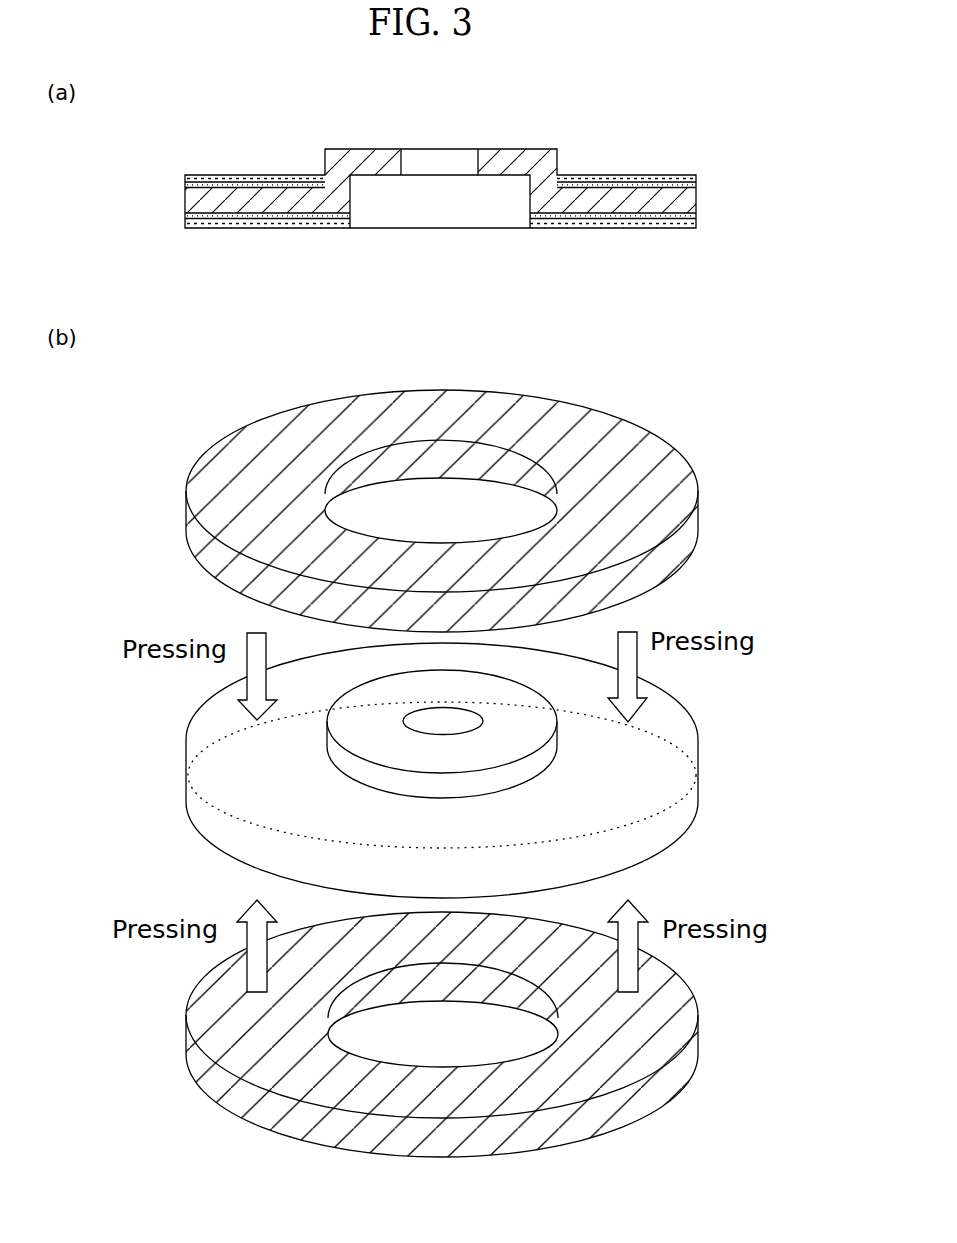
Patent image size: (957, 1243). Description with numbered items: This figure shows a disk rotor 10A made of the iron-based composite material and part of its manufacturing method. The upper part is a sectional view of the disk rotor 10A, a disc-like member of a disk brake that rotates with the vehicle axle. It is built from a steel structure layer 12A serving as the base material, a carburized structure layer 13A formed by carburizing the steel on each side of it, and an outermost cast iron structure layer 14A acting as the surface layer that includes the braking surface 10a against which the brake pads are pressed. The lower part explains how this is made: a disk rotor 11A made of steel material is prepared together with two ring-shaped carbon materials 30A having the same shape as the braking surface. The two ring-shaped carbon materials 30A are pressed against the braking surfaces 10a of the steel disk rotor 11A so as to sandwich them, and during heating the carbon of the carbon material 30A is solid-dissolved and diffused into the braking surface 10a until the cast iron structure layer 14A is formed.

The disk rotor 10A is at (783, 115).
The braking surface 10a is at (586, 175).
The steel structure layer 12A is at (697, 200).
The carburized structure layer 13A is at (697, 185).
The cast iron structure layer 14A is at (685, 177).
The ring-shaped carbon material 30A is at (600, 411).
The disk rotor made of steel material 11A is at (187, 787).